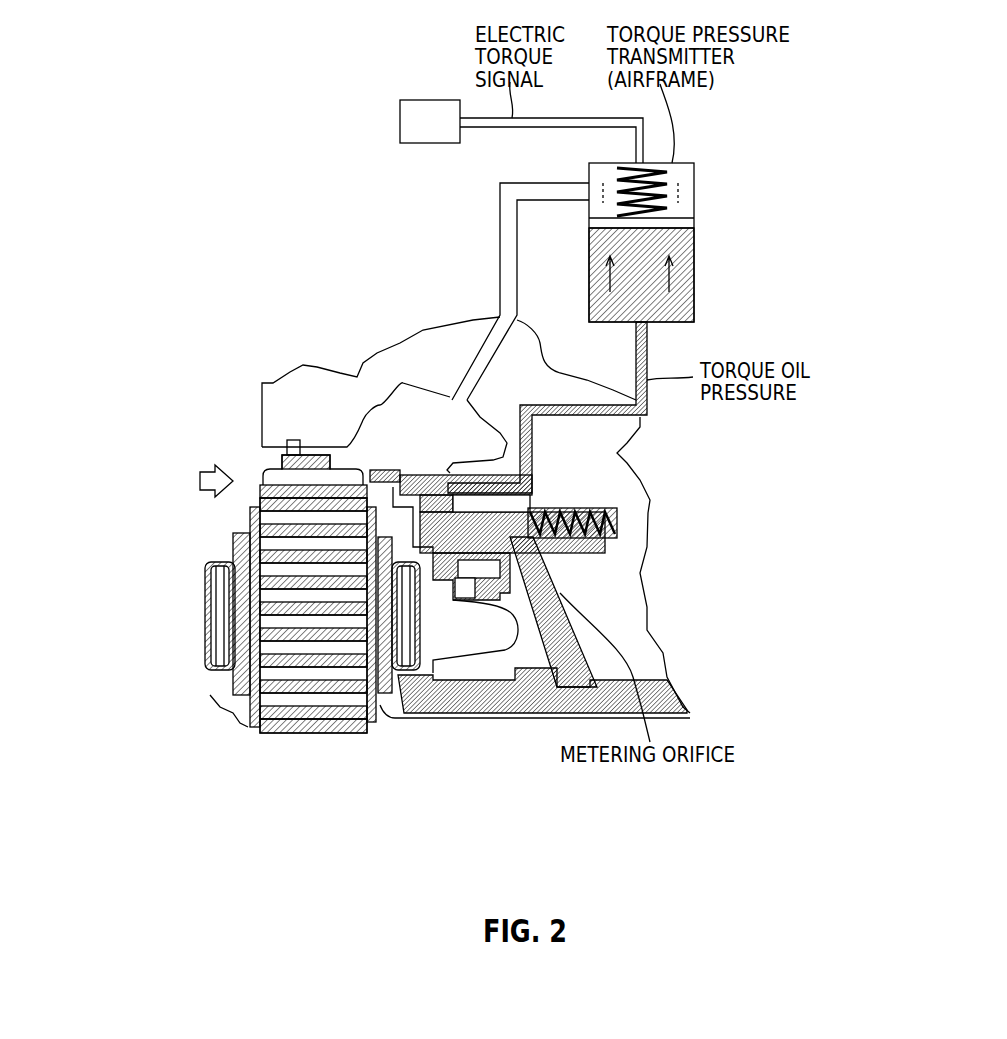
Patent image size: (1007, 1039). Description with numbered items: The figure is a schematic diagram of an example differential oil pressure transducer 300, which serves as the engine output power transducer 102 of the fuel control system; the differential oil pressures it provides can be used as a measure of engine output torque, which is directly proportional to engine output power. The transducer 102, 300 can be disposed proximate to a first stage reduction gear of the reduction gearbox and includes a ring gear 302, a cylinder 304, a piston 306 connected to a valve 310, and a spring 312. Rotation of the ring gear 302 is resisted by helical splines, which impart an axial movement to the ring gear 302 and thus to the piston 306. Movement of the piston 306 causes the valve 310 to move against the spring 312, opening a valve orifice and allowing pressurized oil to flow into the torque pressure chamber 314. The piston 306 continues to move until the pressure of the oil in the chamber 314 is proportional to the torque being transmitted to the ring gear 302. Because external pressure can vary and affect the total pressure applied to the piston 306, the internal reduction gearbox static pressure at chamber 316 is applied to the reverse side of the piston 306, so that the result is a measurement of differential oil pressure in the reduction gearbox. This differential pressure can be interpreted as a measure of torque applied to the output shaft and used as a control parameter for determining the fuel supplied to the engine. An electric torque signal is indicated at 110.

The electric torque signal controller 110 is at (521, 131).
The engine output power transducer 102 is at (848, 606).
The differential oil pressure transducer 300 is at (571, 328).
The ring gear 302 is at (318, 470).
The cylinder 304 is at (403, 473).
The piston 306 is at (443, 587).
The valve 310 is at (600, 553).
The spring 312 is at (617, 522).
The torque pressure chamber 314 is at (520, 476).
The chamber 316 is at (417, 413).